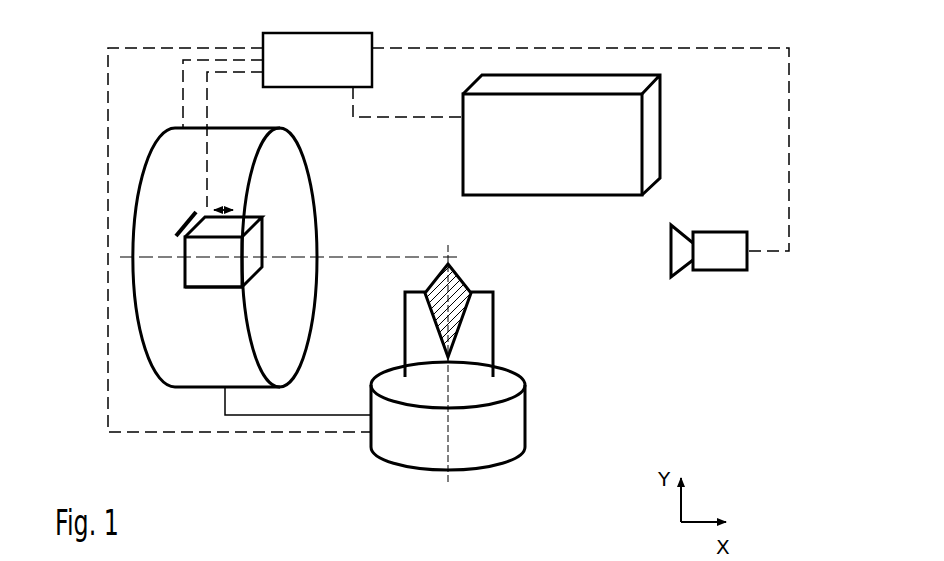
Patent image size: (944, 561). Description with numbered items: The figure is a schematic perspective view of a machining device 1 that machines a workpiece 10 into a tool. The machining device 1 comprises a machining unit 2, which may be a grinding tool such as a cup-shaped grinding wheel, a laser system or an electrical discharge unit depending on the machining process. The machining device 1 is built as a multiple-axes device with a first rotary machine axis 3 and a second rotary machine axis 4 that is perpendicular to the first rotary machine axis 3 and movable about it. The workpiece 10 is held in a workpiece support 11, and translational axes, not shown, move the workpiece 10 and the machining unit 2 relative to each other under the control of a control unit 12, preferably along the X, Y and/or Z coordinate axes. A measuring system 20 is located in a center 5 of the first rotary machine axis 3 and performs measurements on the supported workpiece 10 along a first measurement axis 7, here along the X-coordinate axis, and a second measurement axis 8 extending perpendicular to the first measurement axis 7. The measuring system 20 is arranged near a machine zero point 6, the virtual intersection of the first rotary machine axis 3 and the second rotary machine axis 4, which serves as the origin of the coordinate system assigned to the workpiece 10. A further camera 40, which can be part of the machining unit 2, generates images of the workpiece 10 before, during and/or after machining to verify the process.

The machining device 1 is at (655, 348).
The machining unit 2 is at (680, 152).
The first rotary machine axis 3 is at (130, 252).
The second rotary machine axis 4 is at (453, 451).
The center 5 is at (250, 255).
The machine zero point 6 is at (454, 255).
The first measurement axis 7 is at (224, 207).
The second measurement axis 8 is at (181, 224).
The workpiece 10 is at (463, 273).
The workpiece support 11 is at (494, 342).
The control unit 12 is at (372, 46).
The measuring system 20 is at (204, 292).
The further camera 40 is at (731, 271).